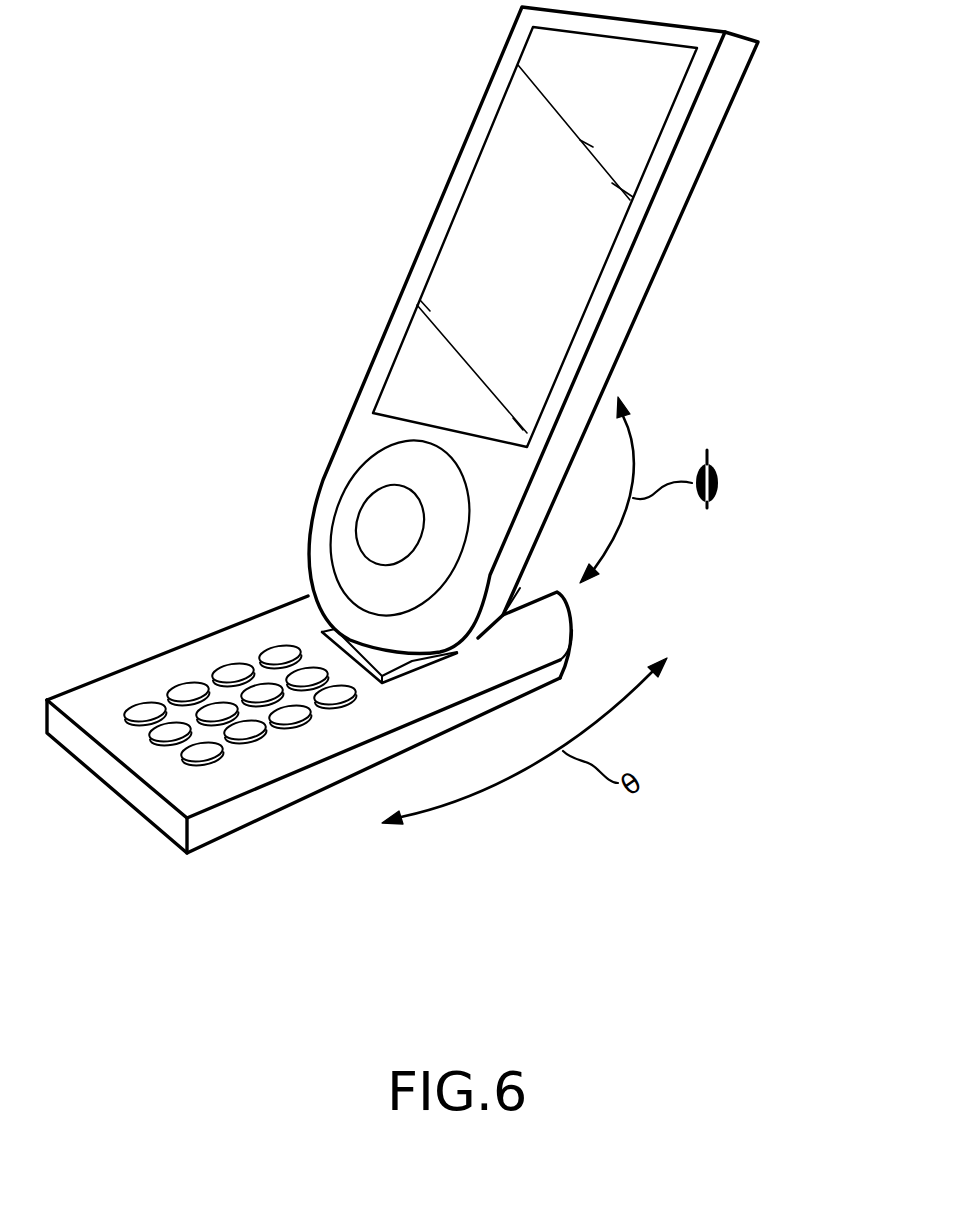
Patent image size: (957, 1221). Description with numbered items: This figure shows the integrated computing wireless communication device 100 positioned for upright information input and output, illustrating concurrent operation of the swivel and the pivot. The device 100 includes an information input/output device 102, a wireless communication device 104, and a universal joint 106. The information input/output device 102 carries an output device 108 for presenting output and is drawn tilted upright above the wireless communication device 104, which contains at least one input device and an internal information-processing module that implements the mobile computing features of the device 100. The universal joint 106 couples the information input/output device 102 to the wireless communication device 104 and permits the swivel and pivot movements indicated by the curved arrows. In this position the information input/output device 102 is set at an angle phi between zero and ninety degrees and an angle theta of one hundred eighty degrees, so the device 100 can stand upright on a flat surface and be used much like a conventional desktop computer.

The integrated computing wireless communication device 100 is at (436, 482).
The information input/output device 102 is at (565, 330).
The wireless communication device 104 is at (263, 817).
The universal joint 106 is at (302, 609).
The output device 108 is at (448, 200).